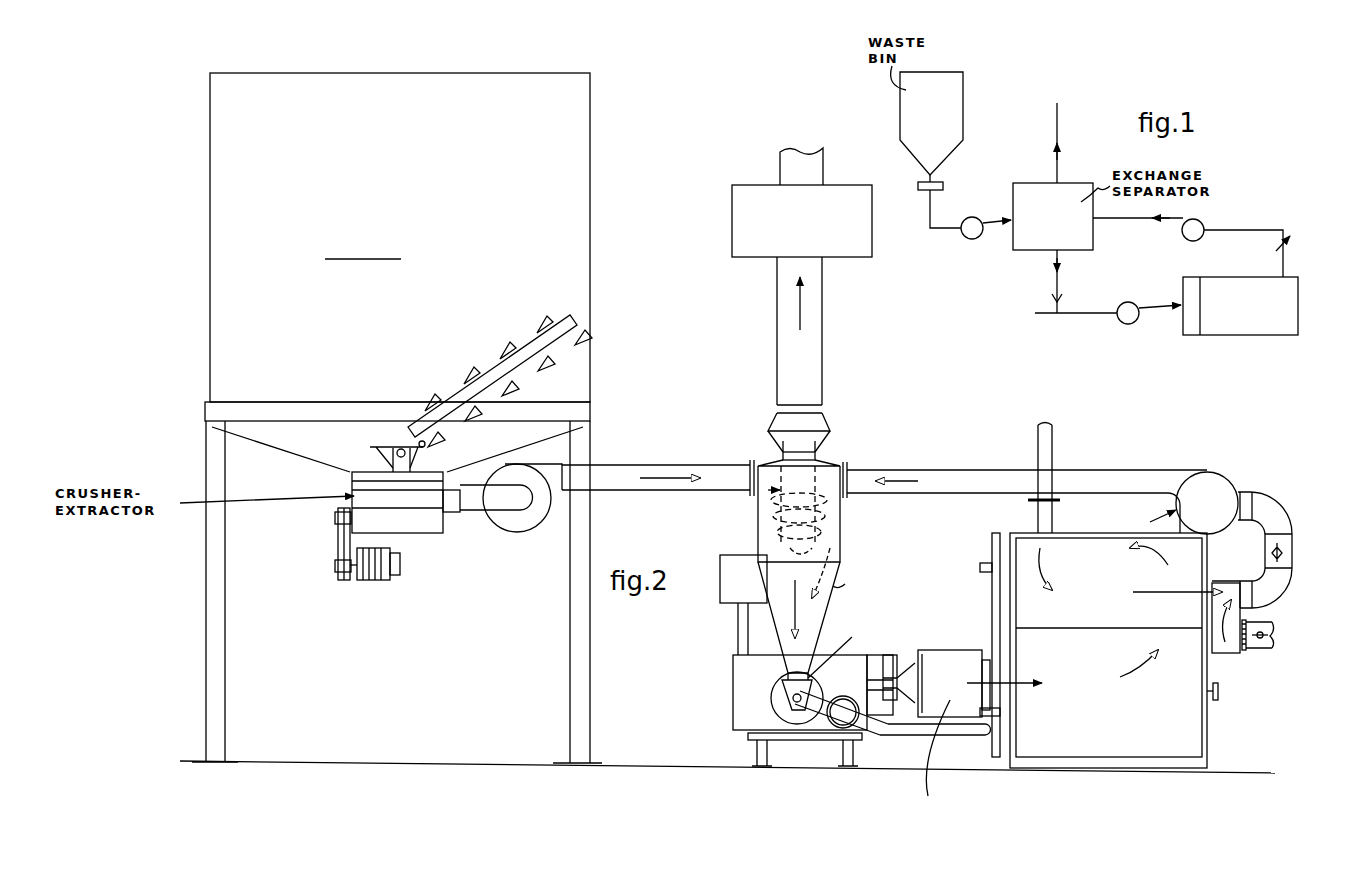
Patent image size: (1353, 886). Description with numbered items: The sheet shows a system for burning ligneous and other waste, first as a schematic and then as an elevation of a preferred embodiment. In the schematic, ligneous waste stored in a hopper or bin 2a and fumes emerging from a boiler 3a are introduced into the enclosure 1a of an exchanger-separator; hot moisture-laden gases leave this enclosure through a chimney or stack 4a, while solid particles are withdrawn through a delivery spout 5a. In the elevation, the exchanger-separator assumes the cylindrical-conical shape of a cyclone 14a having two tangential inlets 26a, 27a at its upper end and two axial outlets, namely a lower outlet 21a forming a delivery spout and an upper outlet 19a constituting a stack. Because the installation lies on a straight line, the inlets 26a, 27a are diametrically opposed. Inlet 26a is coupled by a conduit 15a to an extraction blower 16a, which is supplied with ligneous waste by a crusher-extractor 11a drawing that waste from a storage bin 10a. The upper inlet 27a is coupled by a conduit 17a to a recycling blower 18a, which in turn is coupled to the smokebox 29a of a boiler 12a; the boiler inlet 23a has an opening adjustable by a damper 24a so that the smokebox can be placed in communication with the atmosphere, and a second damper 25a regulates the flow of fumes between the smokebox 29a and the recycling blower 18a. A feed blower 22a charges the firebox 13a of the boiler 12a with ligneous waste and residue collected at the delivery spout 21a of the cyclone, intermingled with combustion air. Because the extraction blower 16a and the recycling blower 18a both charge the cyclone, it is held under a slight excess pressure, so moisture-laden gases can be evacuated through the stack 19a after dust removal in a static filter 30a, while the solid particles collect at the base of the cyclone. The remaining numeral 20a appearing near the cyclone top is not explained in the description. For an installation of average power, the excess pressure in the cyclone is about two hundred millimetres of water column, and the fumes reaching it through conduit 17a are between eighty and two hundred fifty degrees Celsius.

In FIG. 1, the enclosure of exchanger-separator 1a is at (1031, 243).
In FIG. 1, the hopper or bin 2a is at (960, 113).
In FIG. 1, the boiler 3a is at (1295, 297).
In FIG. 1, the chimney or stack 4a is at (1058, 122).
In FIG. 1, the delivery spout 5a is at (1060, 260).
In FIG. 2, the storage bin 10a is at (578, 218).
In FIG. 2, the crusher-extractor 11a is at (420, 523).
In FIG. 2, the boiler 12a is at (1183, 742).
In FIG. 2, the firebox 13a is at (945, 660).
In FIG. 2, the cyclone 14a is at (838, 539).
In FIG. 2, the conduit 15a is at (636, 472).
In FIG. 2, the extraction blower 16a is at (518, 524).
In FIG. 2, the conduit 17a is at (963, 470).
In FIG. 2, the recycling blower 18a is at (1185, 480).
In FIG. 2, the upper outlet (stack) 19a is at (820, 348).
In FIG. 2, the cyclone top outlet 20a is at (846, 459).
In FIG. 2, the lower outlet (delivery spout) 21a is at (792, 652).
In FIG. 2, the feed blower 22a is at (752, 708).
In FIG. 2, the inlet of boiler 23a is at (1262, 624).
In FIG. 2, the damper 24a is at (1246, 651).
In FIG. 2, the second damper 25a is at (1284, 553).
In FIG. 2, the tangential inlet 26a is at (748, 462).
In FIG. 2, the tangential inlet 27a is at (850, 473).
In FIG. 2, the smokebox 29a is at (1216, 584).
In FIG. 2, the static filter 30a is at (848, 192).